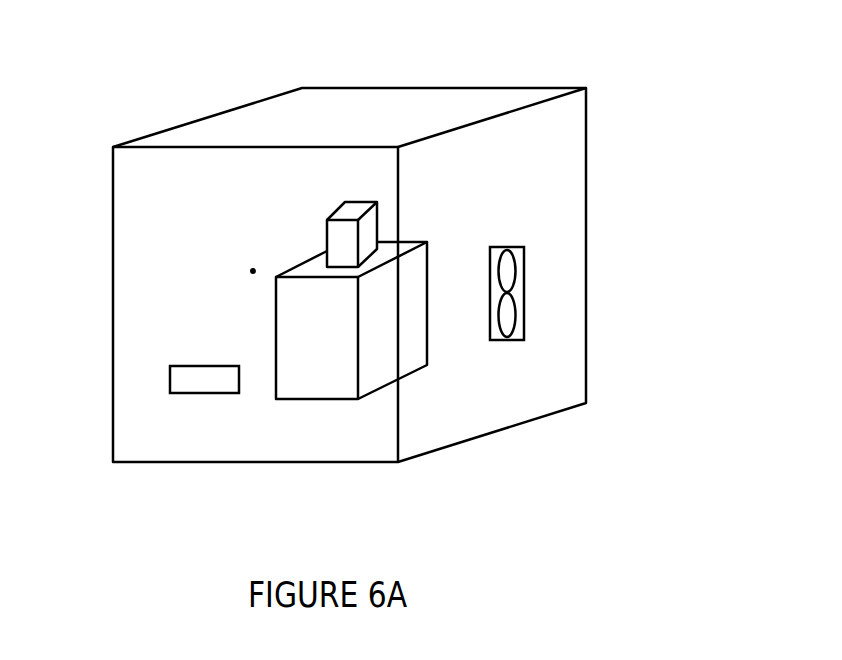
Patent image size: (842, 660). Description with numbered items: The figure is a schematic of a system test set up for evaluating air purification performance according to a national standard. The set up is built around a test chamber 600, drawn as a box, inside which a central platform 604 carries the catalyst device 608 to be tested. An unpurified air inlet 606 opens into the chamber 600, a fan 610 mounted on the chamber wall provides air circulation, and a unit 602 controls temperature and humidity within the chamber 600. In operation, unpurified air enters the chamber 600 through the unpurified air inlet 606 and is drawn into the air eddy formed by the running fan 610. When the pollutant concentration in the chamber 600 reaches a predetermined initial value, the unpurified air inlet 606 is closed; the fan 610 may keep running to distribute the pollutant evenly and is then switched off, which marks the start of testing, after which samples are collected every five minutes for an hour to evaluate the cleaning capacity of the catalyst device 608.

The test chamber 600 is at (385, 55).
The unit controlling temperature and humidity 602 is at (197, 393).
The central platform 604 is at (320, 399).
The unpurified air inlet 606 is at (253, 271).
The catalyst device 608 is at (328, 221).
The fan 610 is at (524, 293).